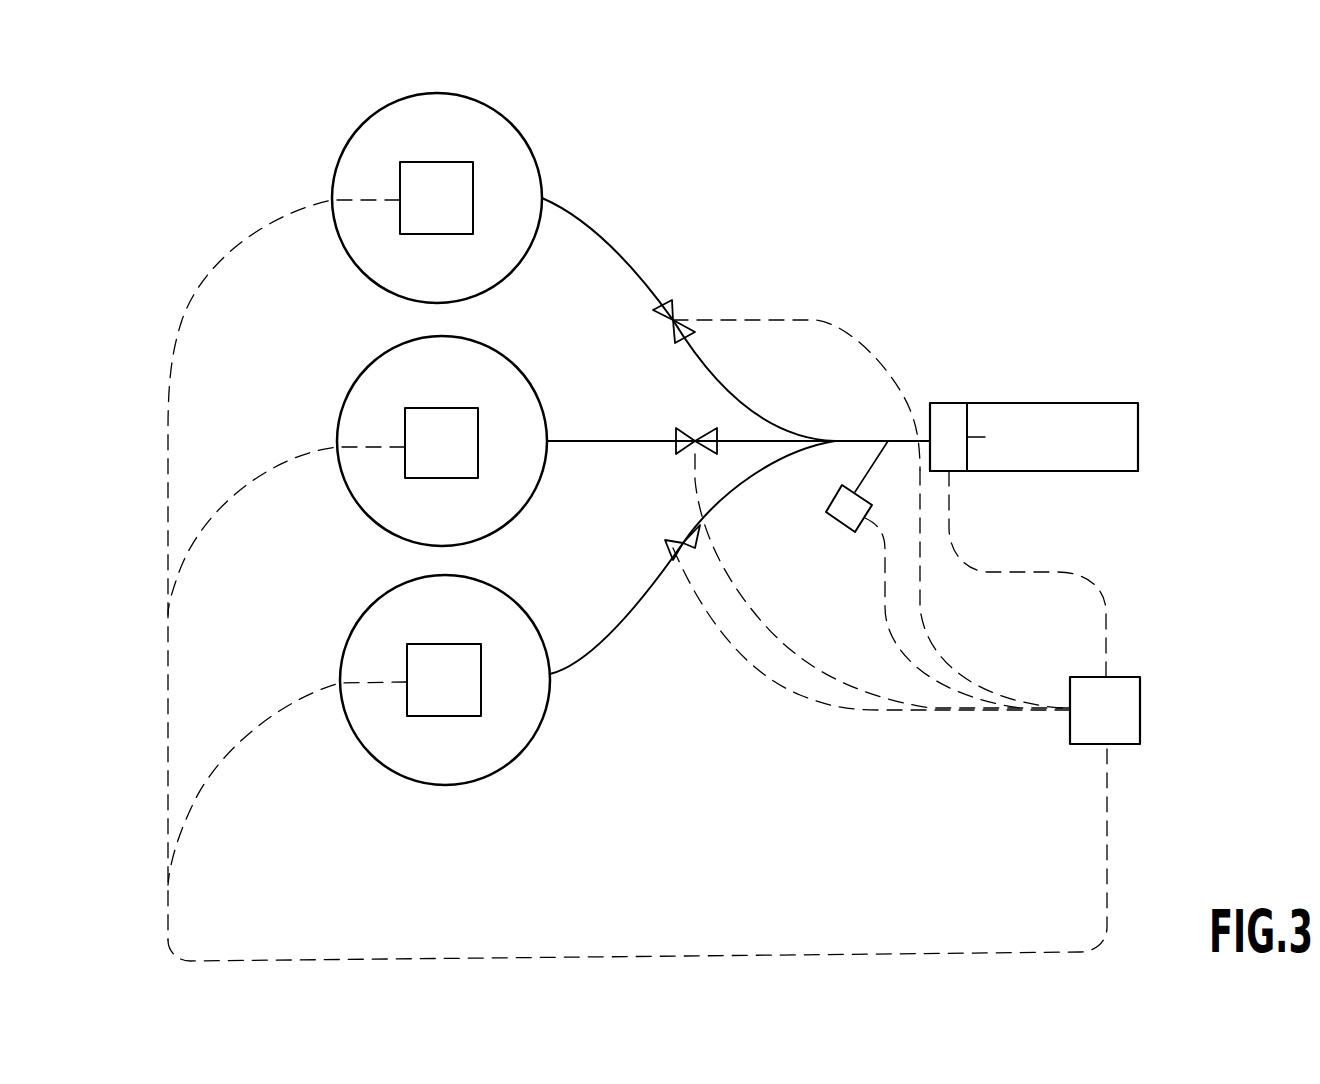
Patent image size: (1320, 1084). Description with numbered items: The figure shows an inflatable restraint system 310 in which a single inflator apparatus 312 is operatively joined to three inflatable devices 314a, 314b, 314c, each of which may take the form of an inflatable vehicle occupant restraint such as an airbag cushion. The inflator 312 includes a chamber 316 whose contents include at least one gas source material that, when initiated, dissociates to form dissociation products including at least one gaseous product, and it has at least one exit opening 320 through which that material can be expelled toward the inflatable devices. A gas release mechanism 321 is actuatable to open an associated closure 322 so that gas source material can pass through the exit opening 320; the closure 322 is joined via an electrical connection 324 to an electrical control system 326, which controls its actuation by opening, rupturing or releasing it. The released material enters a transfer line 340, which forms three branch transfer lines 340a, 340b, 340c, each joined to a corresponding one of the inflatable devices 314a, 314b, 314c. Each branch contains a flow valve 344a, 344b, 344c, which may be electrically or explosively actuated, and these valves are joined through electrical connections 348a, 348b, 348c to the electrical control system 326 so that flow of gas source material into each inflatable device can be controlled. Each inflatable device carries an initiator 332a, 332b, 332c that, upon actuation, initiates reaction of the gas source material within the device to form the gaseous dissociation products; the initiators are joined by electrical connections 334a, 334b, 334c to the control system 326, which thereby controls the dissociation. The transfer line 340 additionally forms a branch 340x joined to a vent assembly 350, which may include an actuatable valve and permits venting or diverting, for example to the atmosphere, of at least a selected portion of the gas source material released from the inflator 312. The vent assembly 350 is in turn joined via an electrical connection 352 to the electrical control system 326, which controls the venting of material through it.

The inflatable restraint system 310 is at (868, 201).
The inflator apparatus 312 is at (1089, 443).
The inflatable device 314a is at (504, 107).
The inflatable device 314b is at (514, 366).
The inflatable device 314c is at (504, 601).
The chamber 316 is at (1030, 456).
The exit opening 320 is at (985, 437).
The gas release mechanism 321 is at (954, 403).
The closure 322 is at (932, 406).
The electrical connection 324 is at (1097, 604).
The electrical control system 326 is at (1128, 724).
The initiator 332a is at (432, 188).
The initiator 332b is at (430, 437).
The initiator 332c is at (438, 678).
The electrical connection 334a is at (217, 278).
The electrical connection 334b is at (244, 500).
The electrical connection 334c is at (235, 754).
The transfer line 340 is at (922, 436).
The branch transfer line 340a is at (588, 227).
The branch transfer line 340b is at (612, 440).
The branch transfer line 340c is at (578, 664).
The branch 340x is at (876, 455).
The flow valve 344a is at (675, 311).
The flow valve 344b is at (674, 428).
The flow valve 344c is at (680, 543).
The electrical connection 348a is at (820, 321).
The electrical connection 348b is at (732, 579).
The electrical connection 348c is at (717, 636).
The vent assembly 350 is at (840, 520).
The electrical connection 352 is at (885, 588).